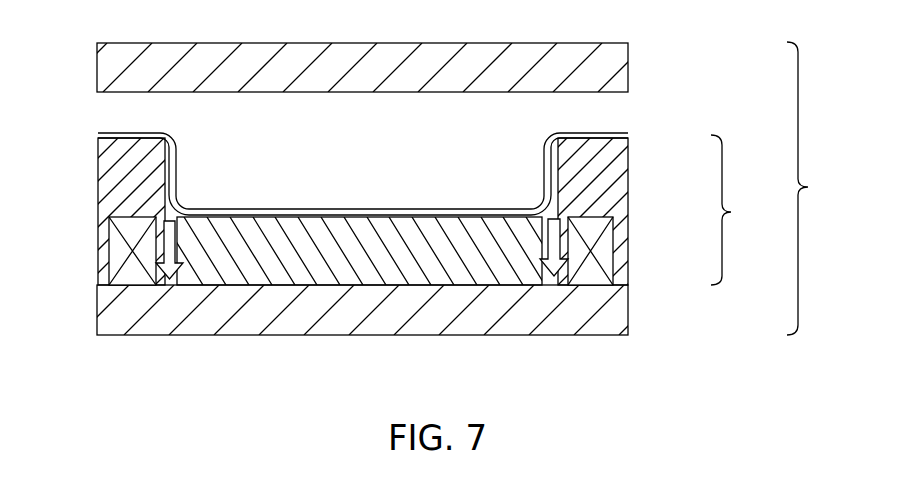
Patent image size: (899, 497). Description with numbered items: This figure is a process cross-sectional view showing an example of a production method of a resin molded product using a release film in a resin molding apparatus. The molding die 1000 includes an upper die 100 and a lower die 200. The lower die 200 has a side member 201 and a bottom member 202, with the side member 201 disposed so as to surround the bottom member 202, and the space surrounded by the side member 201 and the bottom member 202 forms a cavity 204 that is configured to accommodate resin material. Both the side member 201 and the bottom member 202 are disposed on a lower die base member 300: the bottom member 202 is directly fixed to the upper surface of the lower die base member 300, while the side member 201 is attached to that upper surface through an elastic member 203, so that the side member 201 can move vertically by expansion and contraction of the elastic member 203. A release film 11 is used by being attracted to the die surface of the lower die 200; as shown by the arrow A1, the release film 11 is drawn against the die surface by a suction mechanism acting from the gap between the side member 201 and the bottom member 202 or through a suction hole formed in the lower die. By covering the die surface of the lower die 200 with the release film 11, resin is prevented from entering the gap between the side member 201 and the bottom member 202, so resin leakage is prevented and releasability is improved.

The upper die 100 is at (605, 83).
The lower die base member 300 is at (608, 316).
The side member 201 is at (612, 163).
The bottom member 202 is at (522, 243).
The elastic member 203 is at (602, 272).
The cavity 204 is at (517, 188).
The release film 11 is at (601, 137).
The lower die 200 is at (744, 210).
The molding die 1000 is at (827, 188).
The arrow A1 is at (175, 247).